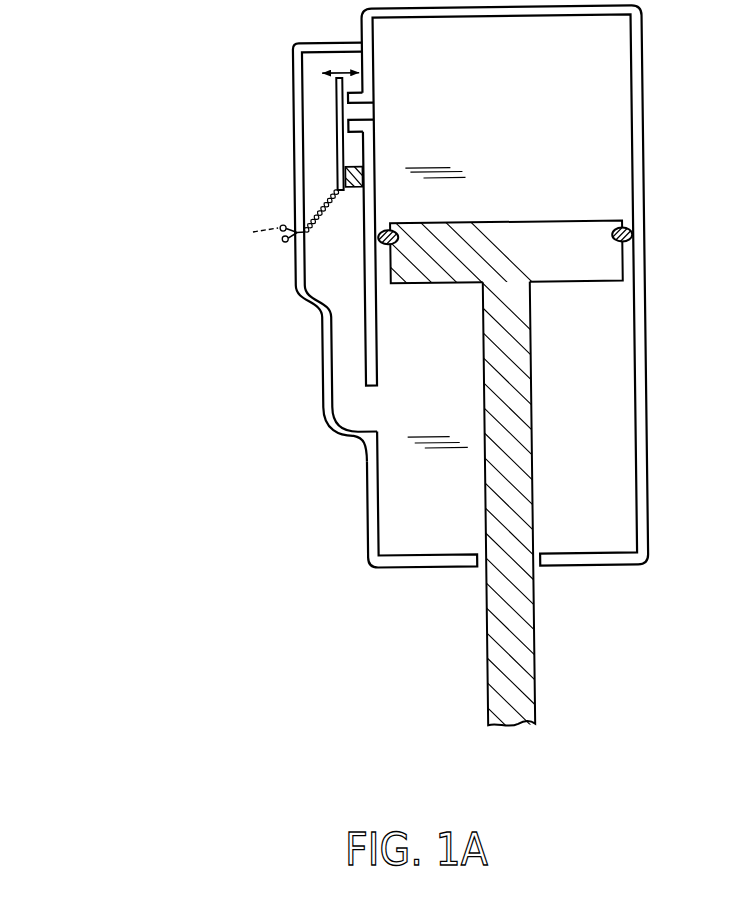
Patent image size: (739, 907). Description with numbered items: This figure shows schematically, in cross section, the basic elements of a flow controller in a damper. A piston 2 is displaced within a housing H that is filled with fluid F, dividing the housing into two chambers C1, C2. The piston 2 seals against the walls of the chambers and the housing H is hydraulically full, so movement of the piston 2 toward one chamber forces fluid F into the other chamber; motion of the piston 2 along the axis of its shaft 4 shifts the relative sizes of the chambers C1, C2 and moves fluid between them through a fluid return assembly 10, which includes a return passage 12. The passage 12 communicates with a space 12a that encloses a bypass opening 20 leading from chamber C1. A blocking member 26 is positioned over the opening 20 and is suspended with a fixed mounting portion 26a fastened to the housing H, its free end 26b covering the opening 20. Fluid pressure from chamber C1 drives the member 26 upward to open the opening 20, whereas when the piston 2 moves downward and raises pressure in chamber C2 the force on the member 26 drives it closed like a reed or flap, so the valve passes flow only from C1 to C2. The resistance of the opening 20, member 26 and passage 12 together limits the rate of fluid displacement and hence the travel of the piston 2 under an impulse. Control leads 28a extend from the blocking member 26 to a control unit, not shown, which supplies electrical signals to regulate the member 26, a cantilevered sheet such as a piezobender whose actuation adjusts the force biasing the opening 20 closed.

The piston 2 is at (524, 222).
The shaft 4 is at (520, 461).
The fluid return assembly 10 is at (225, 254).
The return passage 12 is at (346, 340).
The space 12a is at (356, 263).
The bypass opening 20 is at (377, 108).
The blocking member 26 is at (352, 136).
The fixed mounting portion 26a is at (340, 179).
The free end 26b is at (317, 101).
The control leads 28a is at (318, 225).
The first chamber C1 is at (622, 118).
The second chamber C2 is at (621, 356).
The housing H is at (646, 457).
The fluid F is at (518, 135).